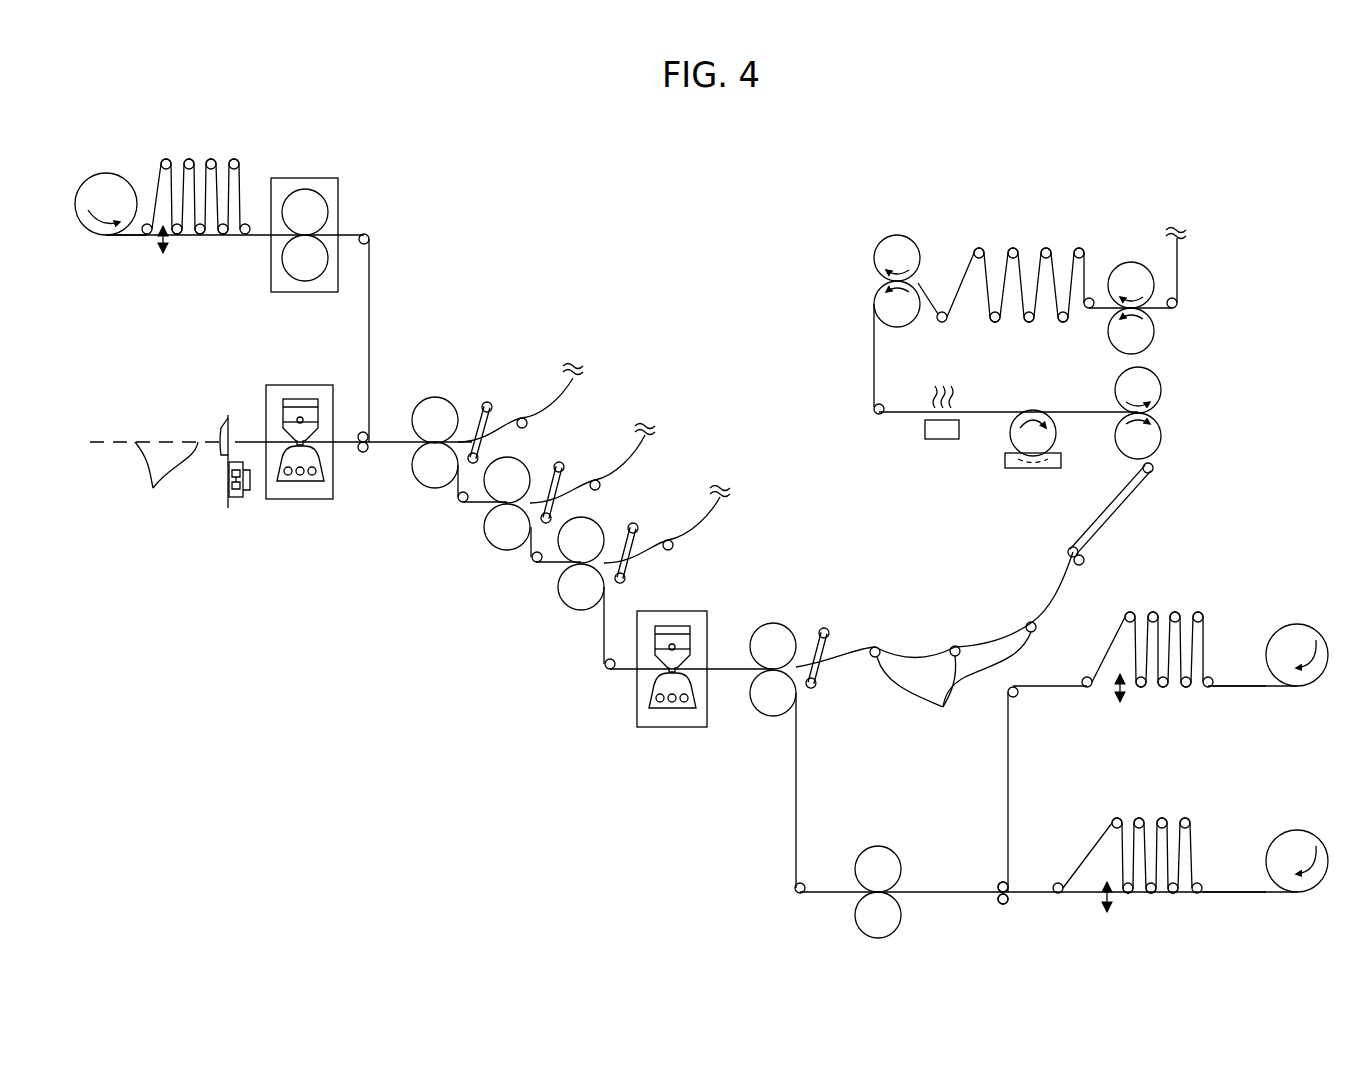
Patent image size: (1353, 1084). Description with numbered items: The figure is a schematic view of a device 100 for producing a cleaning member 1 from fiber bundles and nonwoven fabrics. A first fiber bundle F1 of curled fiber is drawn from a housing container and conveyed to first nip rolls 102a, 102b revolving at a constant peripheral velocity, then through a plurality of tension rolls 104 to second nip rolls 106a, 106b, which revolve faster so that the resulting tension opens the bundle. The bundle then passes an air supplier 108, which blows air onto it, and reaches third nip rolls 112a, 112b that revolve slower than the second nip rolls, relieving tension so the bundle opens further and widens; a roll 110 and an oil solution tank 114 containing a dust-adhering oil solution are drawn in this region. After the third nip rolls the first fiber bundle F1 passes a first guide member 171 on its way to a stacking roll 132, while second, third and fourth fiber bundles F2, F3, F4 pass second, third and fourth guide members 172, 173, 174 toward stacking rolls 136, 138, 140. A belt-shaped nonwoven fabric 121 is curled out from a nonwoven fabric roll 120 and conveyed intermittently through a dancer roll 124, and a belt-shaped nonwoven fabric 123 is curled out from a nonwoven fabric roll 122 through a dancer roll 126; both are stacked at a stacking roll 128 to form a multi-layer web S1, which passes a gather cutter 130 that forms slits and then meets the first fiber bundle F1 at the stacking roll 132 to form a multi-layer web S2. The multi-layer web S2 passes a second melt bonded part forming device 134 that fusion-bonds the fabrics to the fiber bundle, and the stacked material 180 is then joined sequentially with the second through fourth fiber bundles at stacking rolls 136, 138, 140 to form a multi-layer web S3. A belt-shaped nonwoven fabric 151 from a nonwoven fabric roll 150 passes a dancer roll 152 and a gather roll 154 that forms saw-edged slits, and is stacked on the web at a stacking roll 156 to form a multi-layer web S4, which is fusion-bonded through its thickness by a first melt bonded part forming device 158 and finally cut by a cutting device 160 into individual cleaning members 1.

The cleaning member 1 is at (166, 482).
The device 100 is at (1198, 174).
The first nip roll 102a is at (1130, 262).
The first nip roll 102b is at (1153, 340).
The tension rolls 104 is at (1046, 248).
The second nip roll 106a is at (900, 238).
The second nip roll 106b is at (892, 327).
The air supplier 108 is at (925, 438).
The pressing roller 110 is at (1011, 440).
The third nip roll 112a is at (1159, 381).
The third nip roll 112b is at (1161, 431).
The oil solution tank 114 is at (1022, 470).
The nonwoven fabric roll 120 is at (1293, 843).
The belt-shaped nonwoven fabric 121 is at (1218, 890).
The nonwoven fabric roll 122 is at (1293, 635).
The belt-shaped nonwoven fabric 123 is at (1228, 686).
The dancer roll 124 is at (1152, 798).
The dancer roll 126 is at (1157, 590).
The stacking roll 128 is at (1018, 882).
The gather cutter 130 is at (876, 852).
The stacking roll 132 is at (756, 722).
The second melt bonded part forming device 134 is at (670, 611).
The stacking roll 136 is at (573, 598).
The stacking roll 138 is at (500, 545).
The stacking roll 140 is at (435, 480).
The nonwoven fabric roll 150 is at (107, 190).
The belt-shaped nonwoven fabric 151 is at (128, 243).
The dancer roll 152 is at (226, 152).
The gather roll 154 is at (312, 170).
The stacking roll 156 is at (362, 468).
The first melt bonded part forming device 158 is at (282, 385).
The cutting device 160 is at (236, 500).
The first guide member 171 is at (824, 628).
The second guide member 172 is at (635, 522).
The third guide member 173 is at (560, 461).
The fourth guide member 174 is at (486, 401).
The laminate 180 is at (954, 688).
The multi-layer web S1 is at (933, 890).
The multi-layer web S2 is at (728, 668).
The multi-layer web S3 is at (371, 452).
The multi-layer web S4 is at (350, 437).
The first fiber bundle F1 is at (990, 636).
The second fiber bundle F2 is at (716, 513).
The third fiber bundle F3 is at (645, 452).
The fourth fiber bundle F4 is at (570, 392).